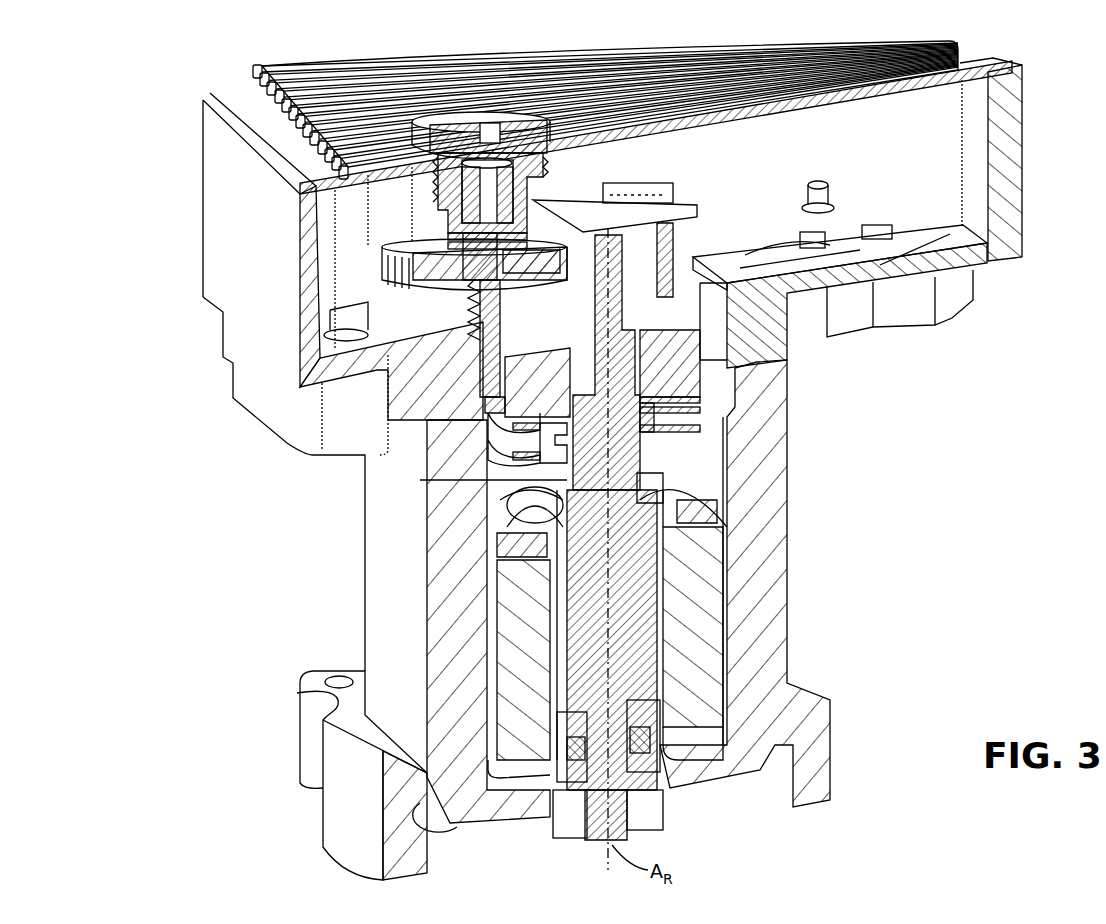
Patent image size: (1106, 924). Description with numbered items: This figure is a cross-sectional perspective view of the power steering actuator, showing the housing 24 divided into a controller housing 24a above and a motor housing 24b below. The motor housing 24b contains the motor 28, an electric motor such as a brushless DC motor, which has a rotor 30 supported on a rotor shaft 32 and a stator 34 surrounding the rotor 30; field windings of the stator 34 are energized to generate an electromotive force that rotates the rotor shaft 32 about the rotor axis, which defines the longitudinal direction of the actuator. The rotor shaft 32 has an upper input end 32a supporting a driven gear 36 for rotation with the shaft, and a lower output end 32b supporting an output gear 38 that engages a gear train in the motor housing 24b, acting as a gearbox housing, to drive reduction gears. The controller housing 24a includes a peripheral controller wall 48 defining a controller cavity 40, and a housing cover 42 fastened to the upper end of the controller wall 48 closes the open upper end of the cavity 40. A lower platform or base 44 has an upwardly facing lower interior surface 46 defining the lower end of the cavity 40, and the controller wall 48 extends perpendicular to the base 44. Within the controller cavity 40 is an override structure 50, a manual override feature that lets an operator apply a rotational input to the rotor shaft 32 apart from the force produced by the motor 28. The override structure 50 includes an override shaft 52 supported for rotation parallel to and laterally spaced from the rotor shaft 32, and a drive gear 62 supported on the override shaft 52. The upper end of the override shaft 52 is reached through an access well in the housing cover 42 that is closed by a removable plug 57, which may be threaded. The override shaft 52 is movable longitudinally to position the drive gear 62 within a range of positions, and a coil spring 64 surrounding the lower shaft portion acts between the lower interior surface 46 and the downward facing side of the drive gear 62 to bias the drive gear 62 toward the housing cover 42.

The housing 24 is at (247, 60).
The controller housing 24a is at (1023, 152).
The motor housing 24b is at (787, 652).
The motor 28 is at (487, 595).
The rotor 30 is at (557, 483).
The rotor shaft 32 is at (633, 455).
The input end 32a is at (645, 280).
The output end 32b is at (628, 782).
The stator 34 is at (710, 532).
The driven gear 36 is at (660, 290).
The output gear 38 is at (555, 838).
The controller cavity 40 is at (340, 233).
The housing cover 42 is at (356, 68).
The base 44 is at (375, 365).
The lower interior surface 46 is at (392, 327).
The peripheral controller wall 48 is at (213, 273).
The override structure 50 is at (393, 237).
The override shaft 52 is at (468, 292).
The plug 57 is at (458, 118).
The drive gear 62 is at (383, 270).
The spring 64 is at (452, 325).